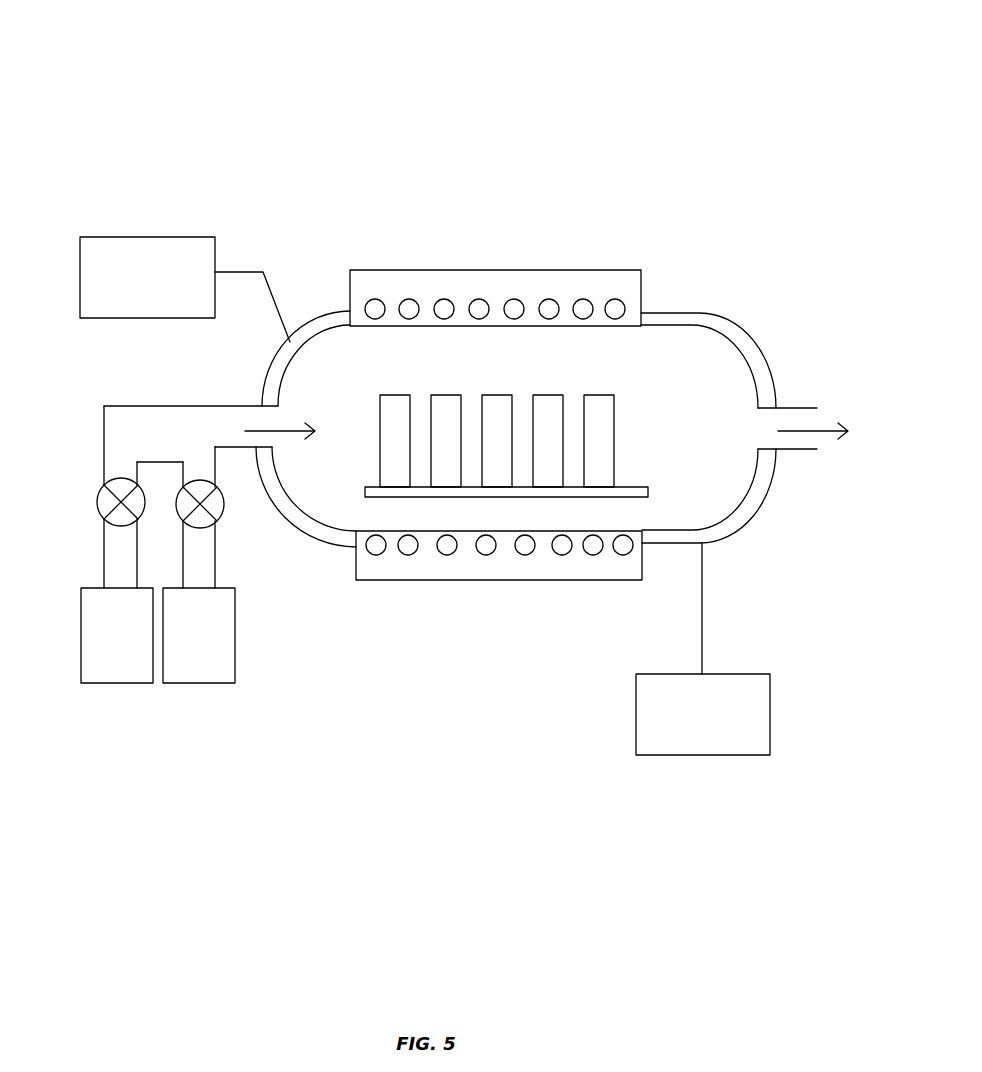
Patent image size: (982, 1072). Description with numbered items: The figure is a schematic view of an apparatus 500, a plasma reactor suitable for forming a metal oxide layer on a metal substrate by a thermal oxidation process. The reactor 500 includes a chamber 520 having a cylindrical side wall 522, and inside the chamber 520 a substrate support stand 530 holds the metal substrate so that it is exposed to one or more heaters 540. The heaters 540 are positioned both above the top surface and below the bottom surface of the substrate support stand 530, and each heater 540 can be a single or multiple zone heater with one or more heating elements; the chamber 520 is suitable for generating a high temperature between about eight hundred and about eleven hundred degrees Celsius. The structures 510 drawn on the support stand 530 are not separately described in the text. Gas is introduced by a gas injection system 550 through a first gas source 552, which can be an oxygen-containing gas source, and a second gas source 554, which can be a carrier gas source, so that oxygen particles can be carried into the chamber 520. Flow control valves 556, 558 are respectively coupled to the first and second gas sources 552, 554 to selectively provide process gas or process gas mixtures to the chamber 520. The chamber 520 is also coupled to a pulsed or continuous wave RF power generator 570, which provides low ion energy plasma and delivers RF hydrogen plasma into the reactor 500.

The apparatus 500 is at (144, 70).
The structures on substrate 510 is at (467, 382).
The chamber 520 is at (583, 378).
The cylindrical side wall 522 is at (713, 316).
The substrate support stand 530 is at (658, 468).
The heaters 540 is at (513, 270).
The gas injection system 550 is at (686, 725).
The first gas source 552 is at (100, 646).
The second gas source 554 is at (182, 646).
The flow control valve 556 is at (95, 517).
The flow control valve 558 is at (224, 508).
The RF power generator 570 is at (130, 289).